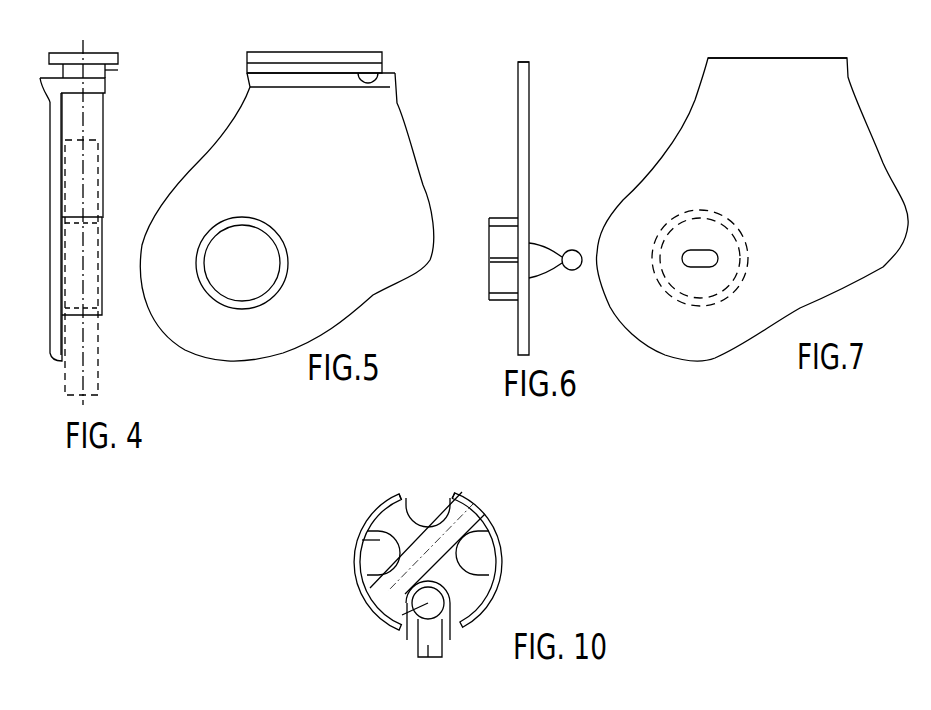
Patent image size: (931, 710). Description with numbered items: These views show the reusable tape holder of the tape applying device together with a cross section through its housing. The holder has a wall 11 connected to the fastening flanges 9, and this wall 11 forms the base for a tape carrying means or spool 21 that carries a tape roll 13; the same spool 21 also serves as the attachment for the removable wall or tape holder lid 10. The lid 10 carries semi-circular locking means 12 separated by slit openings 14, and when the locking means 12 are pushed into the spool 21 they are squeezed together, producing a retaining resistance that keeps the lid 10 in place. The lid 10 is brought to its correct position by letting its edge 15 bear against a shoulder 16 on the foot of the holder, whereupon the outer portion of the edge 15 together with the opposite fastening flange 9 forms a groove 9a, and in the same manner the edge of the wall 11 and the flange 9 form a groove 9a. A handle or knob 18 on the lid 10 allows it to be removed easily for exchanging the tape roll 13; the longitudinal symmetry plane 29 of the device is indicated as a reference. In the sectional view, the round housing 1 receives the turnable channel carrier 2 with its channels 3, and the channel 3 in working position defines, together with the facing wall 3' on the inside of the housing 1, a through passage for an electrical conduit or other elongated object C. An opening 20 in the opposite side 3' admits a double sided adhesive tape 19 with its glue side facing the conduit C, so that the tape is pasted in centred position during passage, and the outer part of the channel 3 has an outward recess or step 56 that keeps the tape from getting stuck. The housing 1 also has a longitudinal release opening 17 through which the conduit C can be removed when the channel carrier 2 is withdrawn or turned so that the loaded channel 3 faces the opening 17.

In FIG. 10, the round housing 1 is at (485, 515).
In FIG. 10, the channel carrier 2 is at (423, 540).
In FIG. 10, the channel 3 is at (430, 543).
In FIG. 10, the opposite wall 3' is at (441, 643).
In FIG. 4, the fastening flange 9 is at (108, 54).
In FIG. 5, the fastening flange 9 is at (325, 40).
In FIG. 4, the groove 9a is at (118, 70).
In FIG. 5, the groove 9a is at (252, 72).
In FIG. 6, the tape holder lid 10 is at (528, 135).
In FIG. 7, the tape holder lid 10 is at (690, 138).
In FIG. 4, the wall 11 is at (52, 214).
In FIG. 5, the wall 11 is at (373, 278).
In FIG. 6, the semi-circular locking means 12 is at (500, 228).
In FIG. 7, the semi-circular locking means 12 is at (670, 216).
In FIG. 4, the tape roll 13 is at (100, 396).
In FIG. 6, the slit opening 14 is at (495, 261).
In FIG. 7, the slit opening 14 is at (754, 258).
In FIG. 6, the lid edge 15 is at (527, 62).
In FIG. 7, the lid edge 15 is at (708, 58).
In FIG. 4, the shoulder 16 is at (105, 86).
In FIG. 5, the shoulder 16 is at (395, 58).
In FIG. 10, the release opening 17 is at (405, 490).
In FIG. 6, the knob 18 is at (574, 250).
In FIG. 7, the knob 18 is at (712, 252).
In FIG. 10, the double sided adhesive tape 19 is at (428, 657).
In FIG. 10, the opening 20 is at (407, 636).
In FIG. 4, the spool 21 is at (98, 283).
In FIG. 5, the spool 21 is at (250, 218).
In FIG. 4, the longitudinal symmetry plane 29 is at (81, 51).
In FIG. 10, the recess or step 56 is at (362, 540).
In FIG. 10, the elongated object C is at (402, 615).